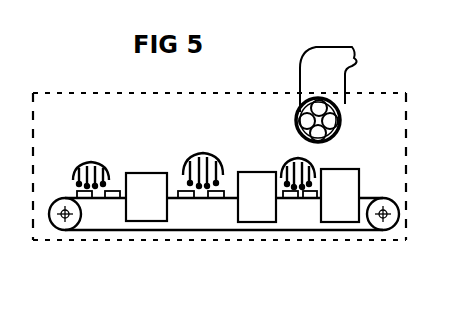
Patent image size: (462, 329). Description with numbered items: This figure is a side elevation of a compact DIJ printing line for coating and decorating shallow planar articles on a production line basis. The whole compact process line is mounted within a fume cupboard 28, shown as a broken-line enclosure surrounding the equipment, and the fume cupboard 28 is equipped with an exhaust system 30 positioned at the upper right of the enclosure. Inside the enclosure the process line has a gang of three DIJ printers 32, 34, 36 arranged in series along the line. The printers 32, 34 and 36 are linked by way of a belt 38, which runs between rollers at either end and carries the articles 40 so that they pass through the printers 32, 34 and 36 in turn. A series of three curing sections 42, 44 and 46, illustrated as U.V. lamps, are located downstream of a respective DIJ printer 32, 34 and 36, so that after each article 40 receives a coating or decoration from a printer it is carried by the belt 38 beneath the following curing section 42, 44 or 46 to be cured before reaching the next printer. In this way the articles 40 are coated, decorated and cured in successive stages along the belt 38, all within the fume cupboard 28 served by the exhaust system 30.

The fume cupboard 28 is at (118, 92).
The exhaust system 30 is at (333, 87).
The DIJ printer 32 is at (346, 210).
The DIJ printer 34 is at (264, 210).
The DIJ printer 36 is at (142, 207).
The belt 38 is at (92, 228).
The articles 40 is at (190, 198).
The curing section 42 is at (296, 160).
The curing section 44 is at (204, 152).
The curing section 46 is at (104, 163).